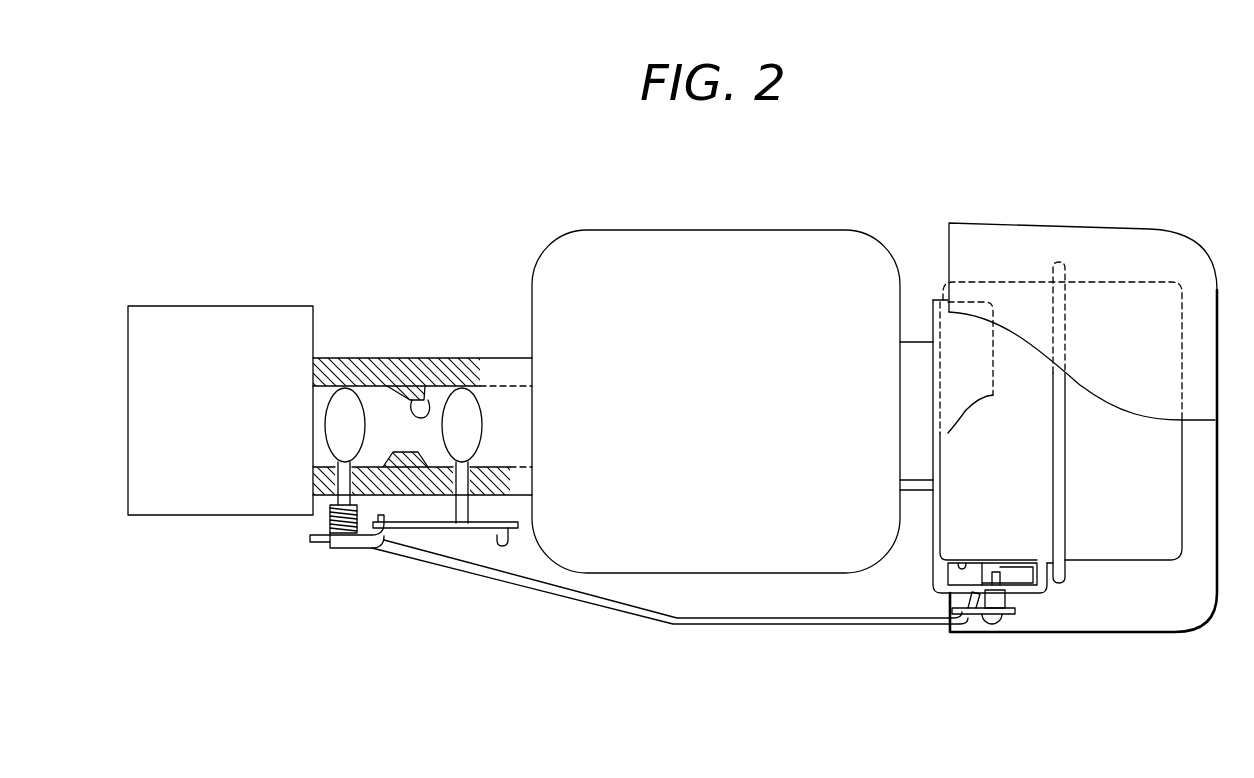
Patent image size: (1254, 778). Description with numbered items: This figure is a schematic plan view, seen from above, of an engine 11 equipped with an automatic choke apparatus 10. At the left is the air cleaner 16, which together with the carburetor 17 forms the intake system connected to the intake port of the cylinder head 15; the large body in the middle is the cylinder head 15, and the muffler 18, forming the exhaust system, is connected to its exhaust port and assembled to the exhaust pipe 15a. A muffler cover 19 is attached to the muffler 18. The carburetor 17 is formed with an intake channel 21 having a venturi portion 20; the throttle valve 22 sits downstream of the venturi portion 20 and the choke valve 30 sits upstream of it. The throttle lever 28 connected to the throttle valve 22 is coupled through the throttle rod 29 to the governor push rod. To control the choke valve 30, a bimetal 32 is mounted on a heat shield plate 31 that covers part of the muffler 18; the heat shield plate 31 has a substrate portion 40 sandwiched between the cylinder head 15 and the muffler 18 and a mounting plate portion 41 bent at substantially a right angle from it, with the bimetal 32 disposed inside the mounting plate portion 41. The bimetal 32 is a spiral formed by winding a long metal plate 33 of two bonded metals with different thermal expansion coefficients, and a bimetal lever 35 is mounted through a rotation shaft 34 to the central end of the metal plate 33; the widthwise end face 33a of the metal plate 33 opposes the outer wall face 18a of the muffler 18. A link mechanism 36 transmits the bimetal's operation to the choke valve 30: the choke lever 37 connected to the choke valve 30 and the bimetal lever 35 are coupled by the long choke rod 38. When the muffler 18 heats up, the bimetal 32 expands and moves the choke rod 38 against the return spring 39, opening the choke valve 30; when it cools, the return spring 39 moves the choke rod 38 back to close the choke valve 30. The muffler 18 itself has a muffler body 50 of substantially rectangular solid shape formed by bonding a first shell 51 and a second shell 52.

The automatic choke apparatus 10 is at (868, 635).
The engine 11 is at (286, 139).
The cylinder head 15 is at (615, 237).
The exhaust pipe 15a is at (905, 348).
The air cleaner 16 is at (218, 315).
The carburetor 17 is at (377, 357).
The muffler 18 is at (1148, 563).
The outer wall face 18a is at (970, 563).
The muffler cover 19 is at (1145, 247).
The venturi portion 20 is at (423, 390).
The intake channel 21 is at (490, 448).
The throttle valve 22 is at (460, 405).
The throttle lever 28 is at (448, 530).
The throttle rod 29 is at (502, 542).
The choke valve 30 is at (340, 405).
The heat shield plate 31 is at (932, 383).
The bimetal 32 is at (945, 572).
The metal plate 33 is at (1010, 575).
The end face 33a is at (1032, 572).
The rotation shaft 34 is at (995, 620).
The bimetal lever 35 is at (975, 614).
The link mechanism 36 is at (692, 632).
The choke lever 37 is at (317, 542).
The choke rod 38 is at (755, 626).
The return spring 39 is at (310, 523).
The substrate portion 40 is at (905, 482).
The mounting plate portion 41 is at (1035, 596).
The muffler body 50 is at (1030, 152).
The first shell 51 is at (1110, 440).
The second shell 52 is at (1015, 362).